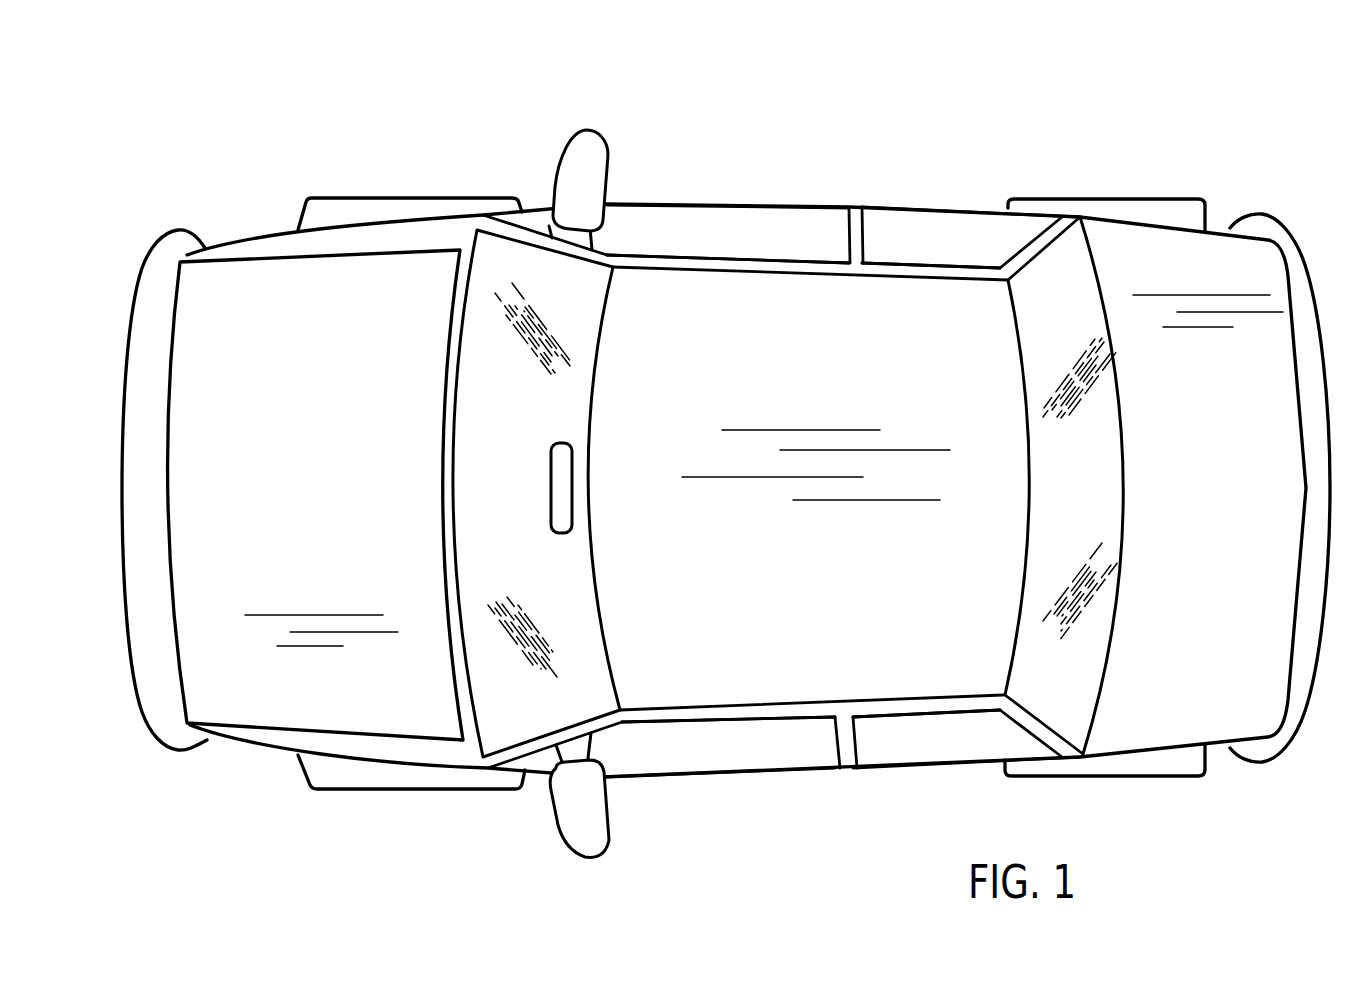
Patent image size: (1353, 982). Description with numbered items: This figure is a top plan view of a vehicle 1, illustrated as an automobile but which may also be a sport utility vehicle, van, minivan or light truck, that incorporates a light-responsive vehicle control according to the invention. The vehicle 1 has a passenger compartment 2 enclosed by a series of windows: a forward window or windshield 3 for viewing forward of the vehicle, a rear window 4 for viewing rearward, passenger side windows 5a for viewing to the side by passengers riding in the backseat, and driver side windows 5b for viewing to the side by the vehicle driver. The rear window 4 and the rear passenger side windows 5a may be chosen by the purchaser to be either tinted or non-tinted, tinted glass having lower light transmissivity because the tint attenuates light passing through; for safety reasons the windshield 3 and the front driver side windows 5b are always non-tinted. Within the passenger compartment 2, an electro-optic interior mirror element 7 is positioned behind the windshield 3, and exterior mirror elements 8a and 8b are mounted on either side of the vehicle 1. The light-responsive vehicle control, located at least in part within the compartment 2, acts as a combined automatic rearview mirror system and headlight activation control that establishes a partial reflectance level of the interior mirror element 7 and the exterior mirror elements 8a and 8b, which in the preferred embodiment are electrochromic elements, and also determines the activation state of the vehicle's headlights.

The vehicle 1 is at (813, 192).
The passenger compartment 2 is at (676, 220).
The windshield 3 is at (515, 423).
The rear window 4 is at (1094, 474).
The passenger side windows 5a is at (970, 256).
The driver side windows 5b is at (781, 251).
The electro-optic interior mirror element 7 is at (574, 455).
The exterior mirror element 8a is at (571, 843).
The exterior mirror element 8b is at (573, 130).